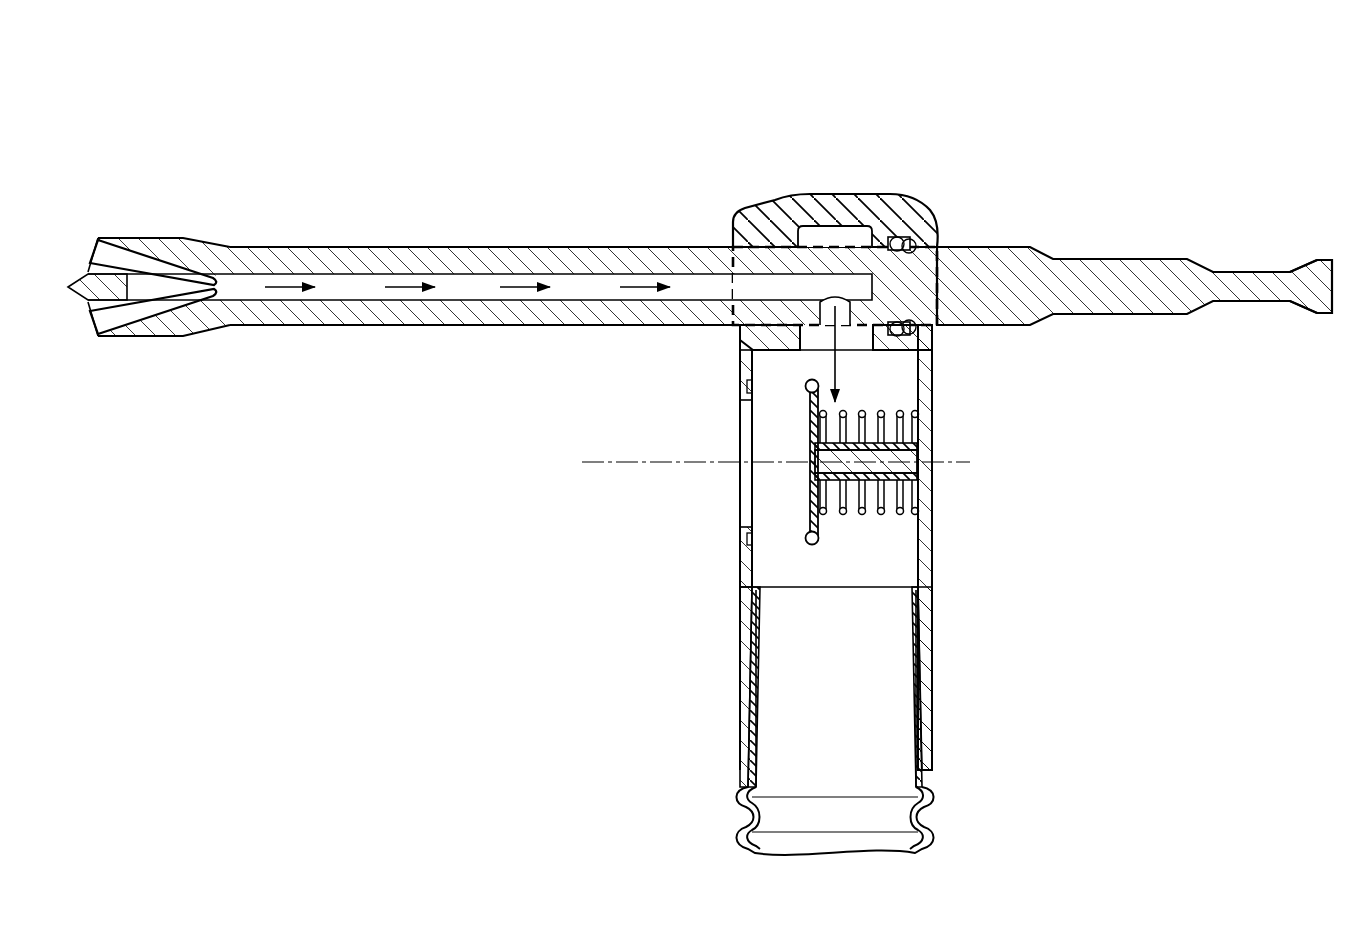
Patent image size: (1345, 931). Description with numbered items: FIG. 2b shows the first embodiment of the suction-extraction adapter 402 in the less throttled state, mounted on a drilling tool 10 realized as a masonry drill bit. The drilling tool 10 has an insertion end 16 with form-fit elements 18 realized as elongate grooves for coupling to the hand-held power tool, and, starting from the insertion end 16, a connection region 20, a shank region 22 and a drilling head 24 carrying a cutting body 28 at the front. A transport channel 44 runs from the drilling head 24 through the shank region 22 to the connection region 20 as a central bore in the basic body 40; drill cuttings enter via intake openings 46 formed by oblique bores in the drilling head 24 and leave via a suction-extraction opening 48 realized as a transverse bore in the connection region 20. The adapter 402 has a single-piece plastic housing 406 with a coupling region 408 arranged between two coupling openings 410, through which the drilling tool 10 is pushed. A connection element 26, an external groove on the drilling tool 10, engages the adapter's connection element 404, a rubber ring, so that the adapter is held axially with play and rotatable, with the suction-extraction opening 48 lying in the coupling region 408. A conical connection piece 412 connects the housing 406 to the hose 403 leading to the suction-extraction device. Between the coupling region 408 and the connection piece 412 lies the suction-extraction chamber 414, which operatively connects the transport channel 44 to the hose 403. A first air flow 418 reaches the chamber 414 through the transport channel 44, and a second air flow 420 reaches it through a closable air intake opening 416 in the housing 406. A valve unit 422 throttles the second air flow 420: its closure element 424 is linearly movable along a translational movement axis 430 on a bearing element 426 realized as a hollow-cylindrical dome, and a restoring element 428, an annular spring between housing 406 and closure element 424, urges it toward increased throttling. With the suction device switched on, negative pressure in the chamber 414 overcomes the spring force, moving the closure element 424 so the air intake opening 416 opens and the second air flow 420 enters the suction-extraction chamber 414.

The drilling tool 10 is at (620, 132).
The insertion end 16 is at (1187, 232).
The form-fit elements 18 is at (1245, 262).
The connection region 20 is at (838, 148).
The shank region 22 is at (465, 232).
The drilling head 24 is at (146, 192).
The connection element 26 is at (910, 242).
The cutting body 28 is at (78, 285).
The basic body 40 is at (523, 250).
The transport channel 44 is at (585, 272).
The intake openings 46 is at (97, 246).
The suction-extraction opening 48 is at (845, 333).
The suction-extraction adapter 402 is at (900, 180).
The hose 403 is at (925, 820).
The connection element 404 is at (898, 240).
The housing 406 is at (803, 205).
The coupling region 408 is at (723, 282).
The coupling openings 410 is at (940, 247).
The connection piece 412 is at (965, 430).
The suction-extraction chamber 414 is at (800, 568).
The air intake opening 416 is at (745, 492).
The first air flow 418 is at (520, 300).
The second air flow 420 is at (720, 462).
The valve unit 422 is at (835, 532).
The closure element 424 is at (808, 392).
The bearing element 426 is at (918, 488).
The restoring element 428 is at (870, 512).
The translational movement axis 430 is at (600, 460).